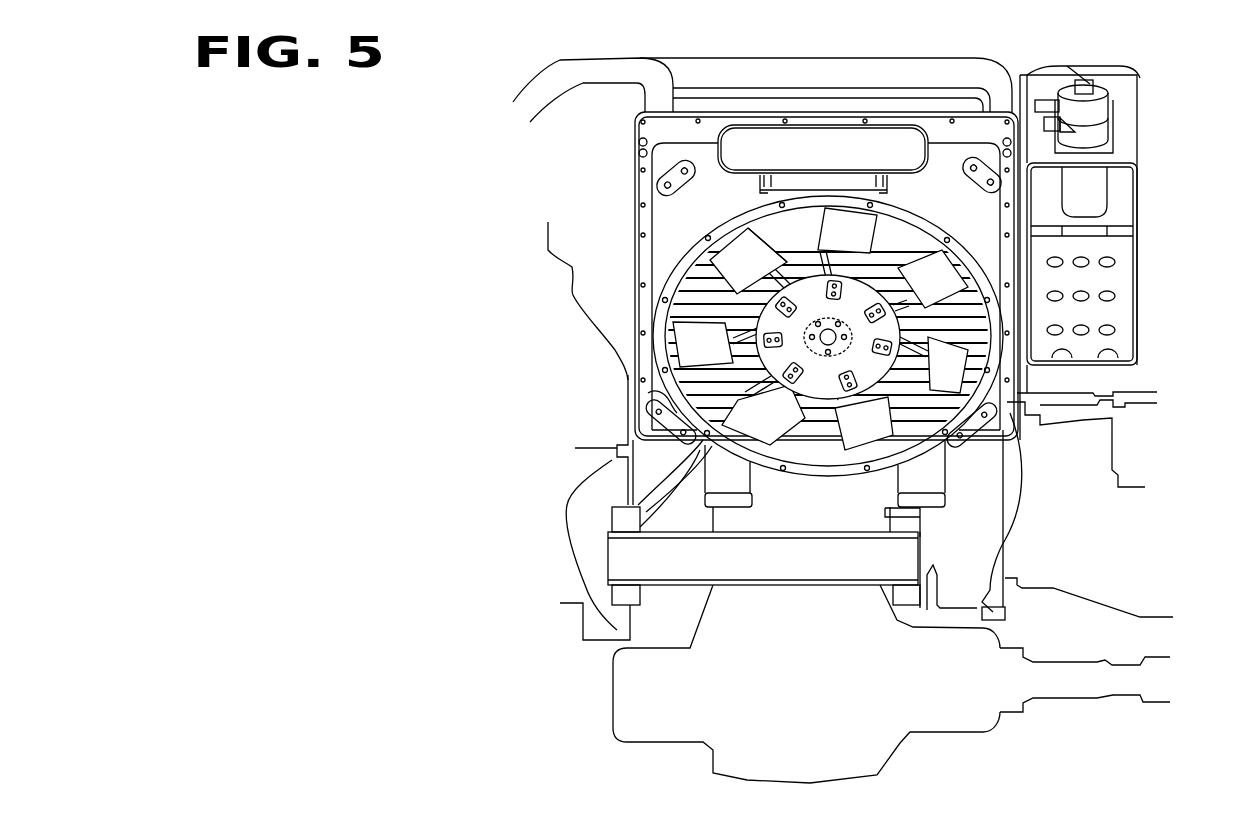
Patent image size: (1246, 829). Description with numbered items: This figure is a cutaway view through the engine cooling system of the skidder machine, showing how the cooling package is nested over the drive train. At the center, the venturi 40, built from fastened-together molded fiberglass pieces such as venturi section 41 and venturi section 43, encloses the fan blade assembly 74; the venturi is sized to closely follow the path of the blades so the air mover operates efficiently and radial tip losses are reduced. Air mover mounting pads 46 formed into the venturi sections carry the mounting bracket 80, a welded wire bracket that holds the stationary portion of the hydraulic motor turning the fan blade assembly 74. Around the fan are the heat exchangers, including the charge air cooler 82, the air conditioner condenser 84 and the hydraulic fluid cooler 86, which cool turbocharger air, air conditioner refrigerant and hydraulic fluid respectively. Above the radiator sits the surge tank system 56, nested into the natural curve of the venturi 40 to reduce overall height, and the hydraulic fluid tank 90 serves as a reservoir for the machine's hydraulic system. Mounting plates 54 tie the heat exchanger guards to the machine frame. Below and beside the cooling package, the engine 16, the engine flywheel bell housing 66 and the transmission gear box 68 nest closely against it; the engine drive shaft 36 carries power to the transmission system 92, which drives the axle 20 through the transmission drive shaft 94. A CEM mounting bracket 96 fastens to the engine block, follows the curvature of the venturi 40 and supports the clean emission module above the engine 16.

The engine 16 is at (545, 338).
The axle 20 is at (794, 766).
The engine drive shaft 36 is at (758, 573).
The venturi 40 is at (642, 157).
The venturi section 41 is at (669, 244).
The venturi section 43 is at (670, 408).
The air mover mounting pads 46 is at (664, 190).
The mounting plates 54 is at (893, 510).
The surge tank system 56 is at (808, 164).
The engine flywheel bell housing 66 is at (568, 512).
The transmission gear box 68 is at (1005, 540).
The fan blade assembly 74 is at (874, 439).
The mounting bracket 80 is at (788, 265).
The charge air cooler 82 is at (759, 238).
The air conditioner condenser 84 is at (987, 323).
The hydraulic fluid cooler 86 is at (880, 399).
The hydraulic fluid tank 90 is at (1135, 72).
The transmission system 92 is at (1062, 524).
The transmission drive shaft 94 is at (1060, 696).
The CEM mounting bracket 96 is at (572, 264).